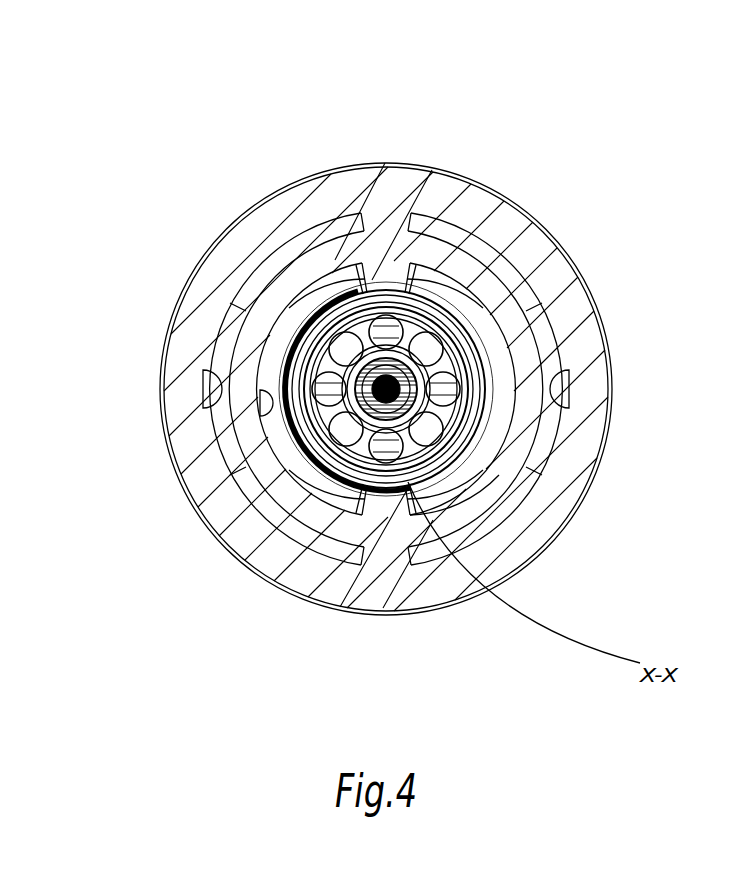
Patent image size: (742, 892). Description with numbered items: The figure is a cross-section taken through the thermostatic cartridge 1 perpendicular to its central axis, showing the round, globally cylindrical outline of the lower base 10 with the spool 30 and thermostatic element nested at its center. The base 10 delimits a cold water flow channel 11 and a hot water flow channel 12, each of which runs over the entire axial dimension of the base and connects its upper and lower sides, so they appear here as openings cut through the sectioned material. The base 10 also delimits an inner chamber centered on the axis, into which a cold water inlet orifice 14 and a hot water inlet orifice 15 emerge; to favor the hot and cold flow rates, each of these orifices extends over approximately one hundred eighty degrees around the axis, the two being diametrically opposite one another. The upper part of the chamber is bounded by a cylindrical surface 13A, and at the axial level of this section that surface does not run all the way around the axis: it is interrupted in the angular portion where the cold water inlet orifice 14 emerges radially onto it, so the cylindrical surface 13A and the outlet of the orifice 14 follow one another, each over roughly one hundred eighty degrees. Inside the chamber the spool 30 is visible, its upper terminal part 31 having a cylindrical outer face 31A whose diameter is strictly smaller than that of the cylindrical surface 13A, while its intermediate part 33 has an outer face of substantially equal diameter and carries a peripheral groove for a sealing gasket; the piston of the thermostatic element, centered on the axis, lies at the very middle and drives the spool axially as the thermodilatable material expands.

The thermostatic cartridge 1 is at (385, 397).
The lower base 10 is at (315, 612).
The cold water flow channel 11 is at (552, 386).
The hot water flow channel 12 is at (205, 391).
The cylindrical surface 13A is at (305, 352).
The cold water inlet orifice 14 is at (505, 420).
The hot water inlet orifice 15 is at (291, 417).
The spool 30 is at (423, 290).
The upper terminal part 31 is at (433, 327).
The cylindrical outer face 31A is at (337, 310).
The intermediate part 33 is at (472, 345).